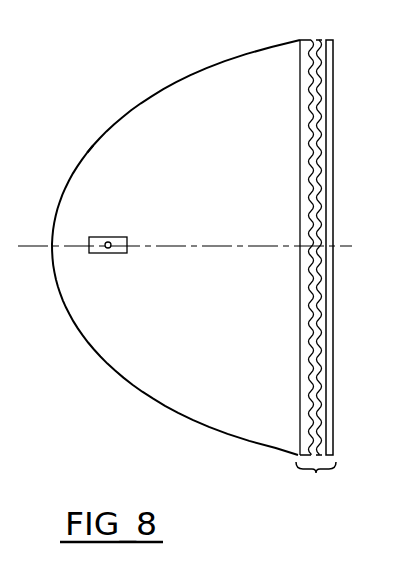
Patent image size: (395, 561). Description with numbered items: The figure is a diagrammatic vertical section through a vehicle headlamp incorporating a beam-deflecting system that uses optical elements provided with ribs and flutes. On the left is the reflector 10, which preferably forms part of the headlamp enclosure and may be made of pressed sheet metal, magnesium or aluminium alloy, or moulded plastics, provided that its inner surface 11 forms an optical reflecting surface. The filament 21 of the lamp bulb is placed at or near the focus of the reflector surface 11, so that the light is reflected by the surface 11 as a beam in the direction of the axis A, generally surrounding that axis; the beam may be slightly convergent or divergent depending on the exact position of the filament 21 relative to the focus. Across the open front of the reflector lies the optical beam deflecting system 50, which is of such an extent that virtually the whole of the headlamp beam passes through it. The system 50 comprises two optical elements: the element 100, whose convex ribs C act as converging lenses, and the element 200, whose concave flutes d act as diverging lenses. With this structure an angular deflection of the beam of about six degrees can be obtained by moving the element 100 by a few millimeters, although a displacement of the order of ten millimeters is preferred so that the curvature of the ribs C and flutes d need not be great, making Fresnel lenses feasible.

The reflector 10 is at (117, 119).
The inner surface 11 is at (86, 150).
The filament 21 is at (118, 254).
The optical element 100 is at (303, 297).
The optical element 200 is at (336, 217).
The optical beam deflecting system 50 is at (316, 481).
The convex ribs C is at (302, 145).
The concave flutes d is at (333, 42).
The axis A is at (188, 232).